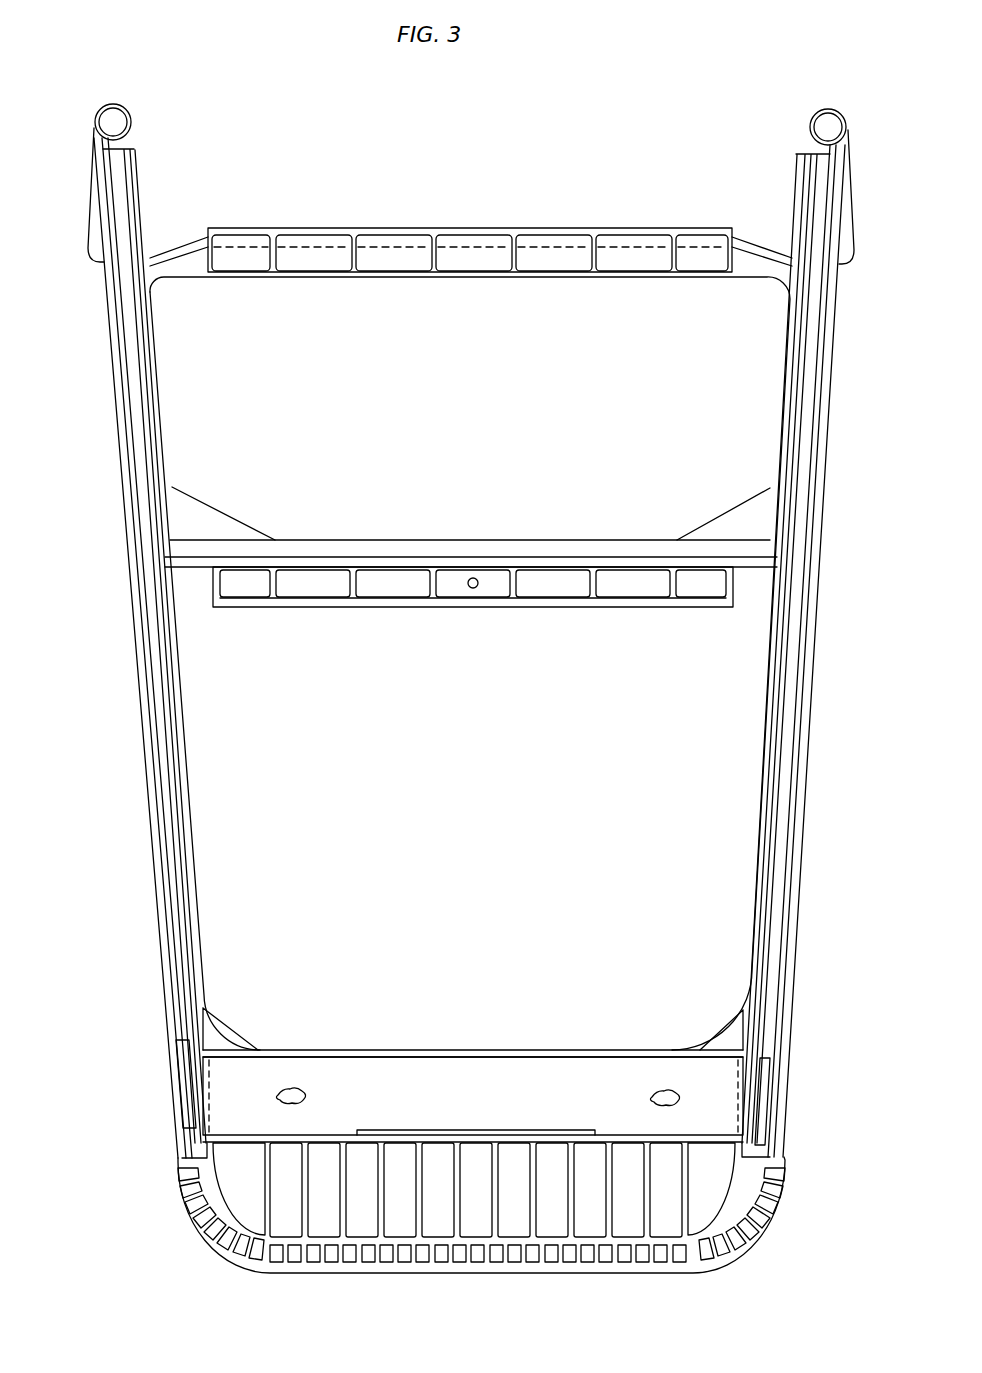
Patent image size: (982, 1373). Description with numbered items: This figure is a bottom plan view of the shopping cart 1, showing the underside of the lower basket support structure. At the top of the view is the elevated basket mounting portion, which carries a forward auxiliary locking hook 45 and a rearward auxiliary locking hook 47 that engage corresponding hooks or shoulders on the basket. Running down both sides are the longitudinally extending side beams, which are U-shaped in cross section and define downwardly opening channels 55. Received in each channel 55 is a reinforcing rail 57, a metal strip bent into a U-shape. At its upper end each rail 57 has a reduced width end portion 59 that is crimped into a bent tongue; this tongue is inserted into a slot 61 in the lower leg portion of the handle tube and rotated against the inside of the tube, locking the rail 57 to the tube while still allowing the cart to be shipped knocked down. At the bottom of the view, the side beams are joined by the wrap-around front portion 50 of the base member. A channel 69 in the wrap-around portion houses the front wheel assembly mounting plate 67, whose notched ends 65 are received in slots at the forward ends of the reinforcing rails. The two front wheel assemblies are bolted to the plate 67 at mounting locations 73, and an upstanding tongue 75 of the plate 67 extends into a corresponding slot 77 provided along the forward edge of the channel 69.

The cart 1 is at (176, 1276).
The forward auxiliary locking hook 45 is at (506, 608).
The rearward auxiliary locking hook 47 is at (526, 228).
The wrap-around front portion 50 is at (723, 1263).
The channel 55 is at (135, 632).
The reinforcing rail 57 is at (143, 383).
The reduced width end portion 59 is at (100, 132).
The slot 61 is at (127, 112).
The notched end 65 is at (188, 1080).
The front wheel assembly mounting plate 67 is at (470, 1093).
The channel 69 is at (272, 1052).
The mounting locations 73 is at (300, 1098).
The upstanding tongue 75 is at (522, 1134).
The slot 77 is at (358, 1134).